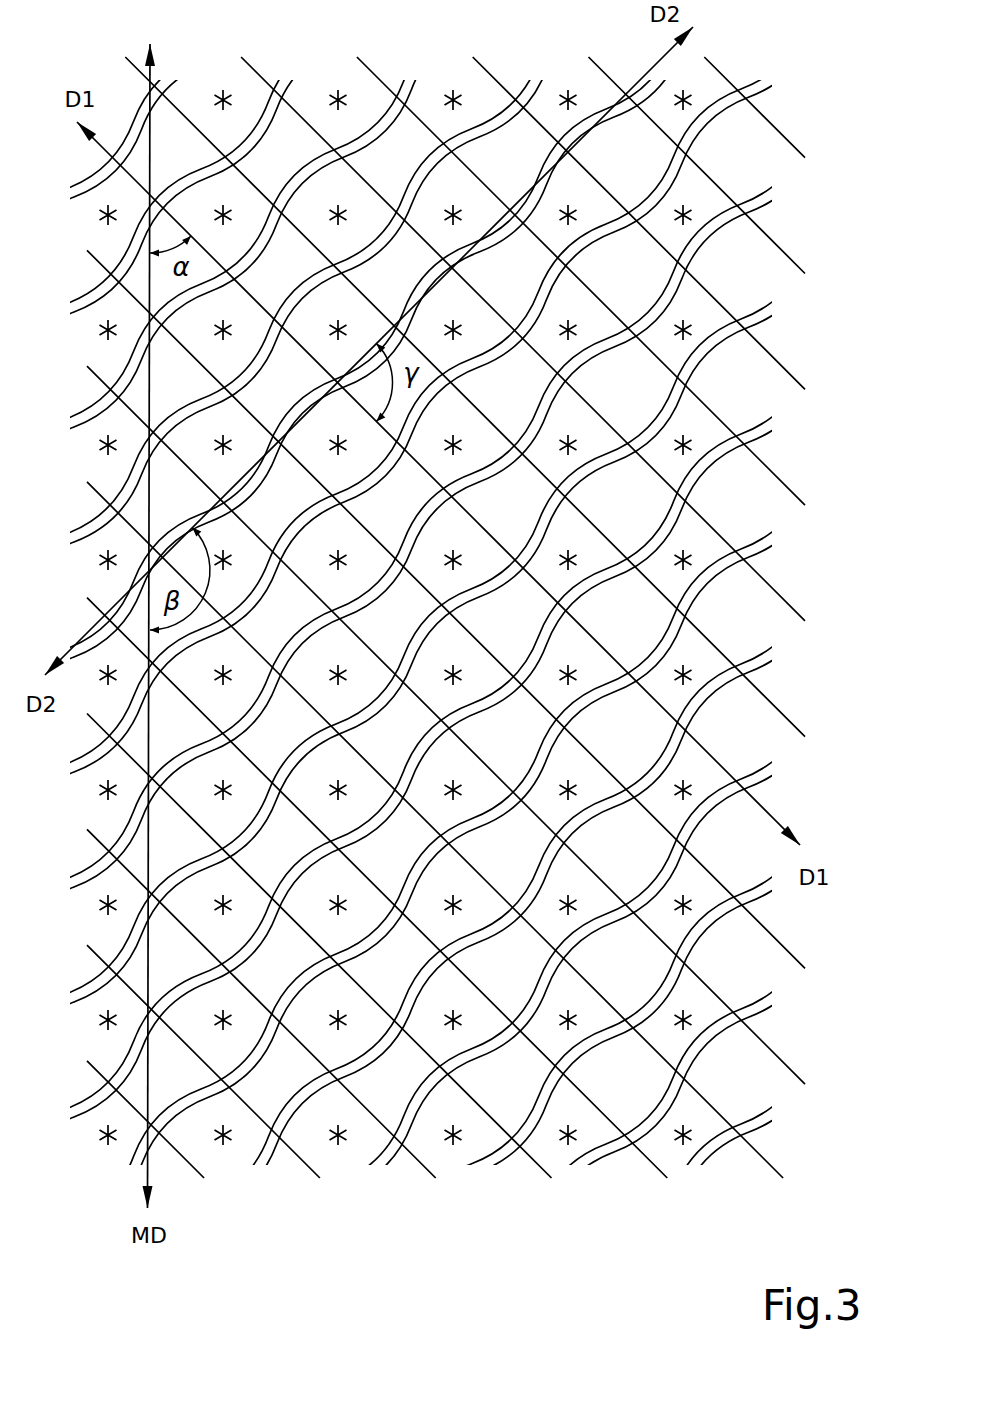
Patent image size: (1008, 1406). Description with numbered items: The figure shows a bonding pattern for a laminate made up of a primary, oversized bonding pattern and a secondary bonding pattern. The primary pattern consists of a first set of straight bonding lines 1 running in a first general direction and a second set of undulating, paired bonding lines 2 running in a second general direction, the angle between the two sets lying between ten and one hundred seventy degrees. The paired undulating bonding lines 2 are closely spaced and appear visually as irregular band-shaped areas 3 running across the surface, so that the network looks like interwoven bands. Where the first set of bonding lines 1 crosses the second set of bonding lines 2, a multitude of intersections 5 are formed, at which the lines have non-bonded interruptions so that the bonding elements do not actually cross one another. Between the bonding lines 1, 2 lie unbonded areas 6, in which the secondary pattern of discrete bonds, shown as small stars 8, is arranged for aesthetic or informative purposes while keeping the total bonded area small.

The first set of bonding lines 1 is at (768, 347).
The second set of bonding lines 2 is at (748, 428).
The band-shaped areas 3 is at (705, 585).
The intersections 5 is at (402, 1150).
The unbonded areas 6 is at (727, 965).
The small stars 8 is at (538, 1160).